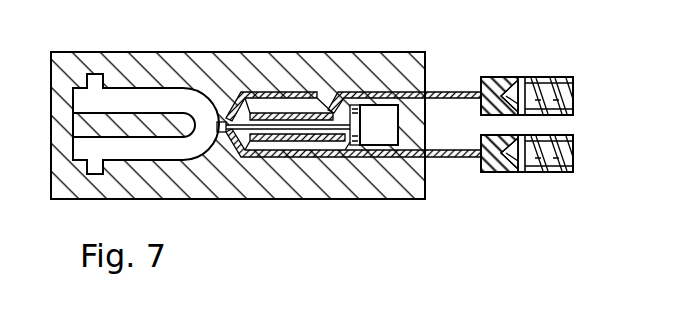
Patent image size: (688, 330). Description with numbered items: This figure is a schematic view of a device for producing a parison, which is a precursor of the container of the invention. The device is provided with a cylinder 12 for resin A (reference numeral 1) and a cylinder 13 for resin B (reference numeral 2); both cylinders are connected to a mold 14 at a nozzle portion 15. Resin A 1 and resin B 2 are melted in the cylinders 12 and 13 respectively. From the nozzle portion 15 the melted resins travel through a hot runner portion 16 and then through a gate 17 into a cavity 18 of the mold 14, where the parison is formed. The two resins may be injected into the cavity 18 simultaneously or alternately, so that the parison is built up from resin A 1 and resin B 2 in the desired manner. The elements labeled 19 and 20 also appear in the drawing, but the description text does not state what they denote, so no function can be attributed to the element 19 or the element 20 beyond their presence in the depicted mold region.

The resin A 1 is at (496, 174).
The resin B 2 is at (499, 77).
The cylinder 12 is at (545, 173).
The cylinder 13 is at (548, 75).
The mold 14 is at (200, 62).
The nozzle portion 15 is at (440, 95).
The hot runner portion 16 is at (331, 150).
The gate 17 is at (223, 118).
The cavity 18 is at (125, 97).
The inner conductor sleeve 19 is at (310, 113).
The termination element 20 is at (388, 112).